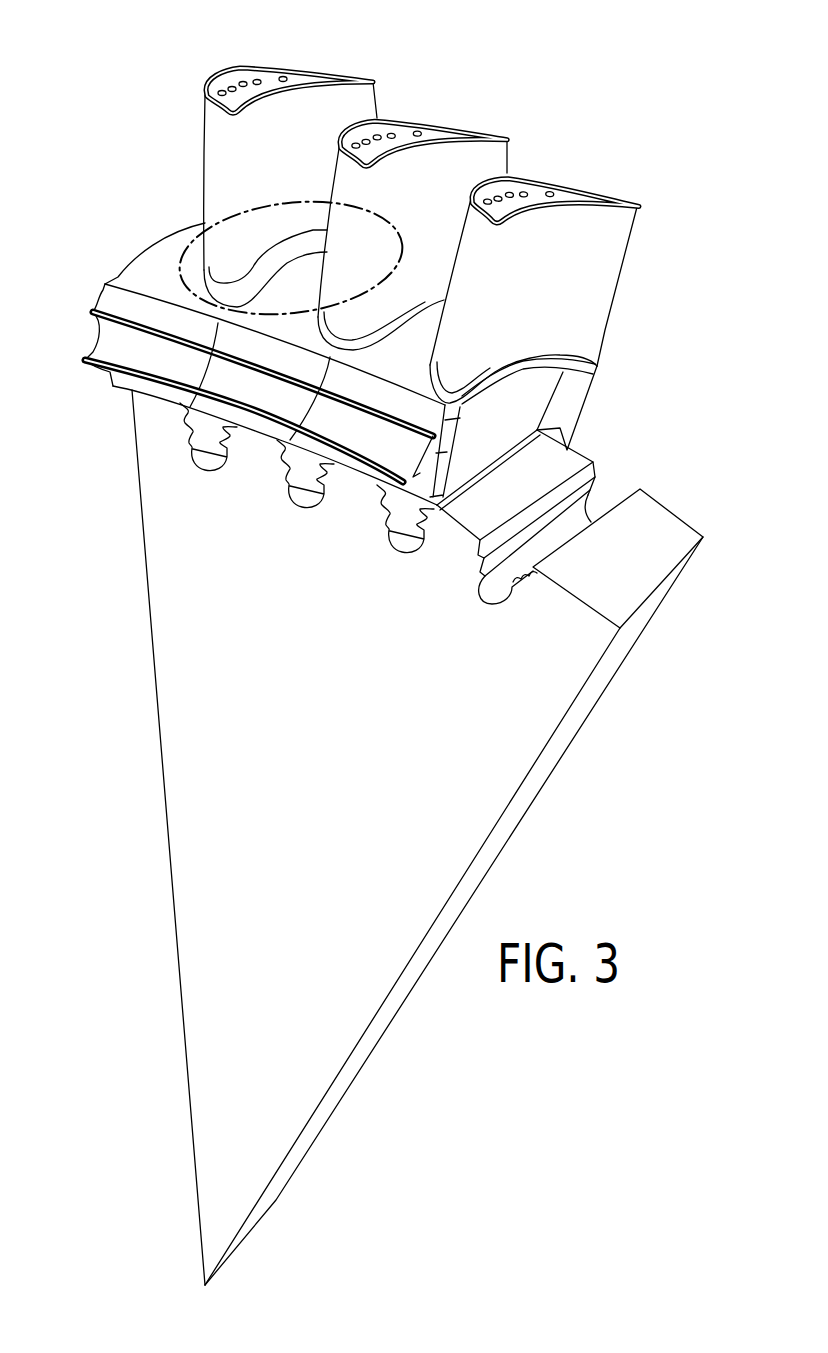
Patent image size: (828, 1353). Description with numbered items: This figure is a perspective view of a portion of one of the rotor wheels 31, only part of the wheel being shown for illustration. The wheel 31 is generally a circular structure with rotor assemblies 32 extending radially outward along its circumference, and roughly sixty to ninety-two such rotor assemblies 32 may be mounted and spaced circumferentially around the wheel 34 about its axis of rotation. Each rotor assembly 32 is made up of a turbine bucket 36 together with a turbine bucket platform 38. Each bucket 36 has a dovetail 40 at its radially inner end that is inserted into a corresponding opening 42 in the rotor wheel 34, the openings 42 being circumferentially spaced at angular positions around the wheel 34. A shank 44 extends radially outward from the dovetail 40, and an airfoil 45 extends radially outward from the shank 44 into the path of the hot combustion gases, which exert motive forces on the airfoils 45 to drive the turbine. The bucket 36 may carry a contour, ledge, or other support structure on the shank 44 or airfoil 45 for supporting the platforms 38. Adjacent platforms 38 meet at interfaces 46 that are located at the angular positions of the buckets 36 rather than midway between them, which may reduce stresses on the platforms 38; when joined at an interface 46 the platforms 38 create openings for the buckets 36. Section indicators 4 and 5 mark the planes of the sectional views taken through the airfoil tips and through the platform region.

The rotor wheel 31 is at (375, 837).
The rotor assemblies 32 is at (431, 302).
The wheel 34 is at (347, 1037).
The turbine bucket 36 is at (647, 207).
The turbine bucket platform 38 is at (138, 275).
The dovetail 40 is at (388, 527).
The openings 42 is at (600, 503).
The shank 44 is at (530, 390).
The airfoil 45 is at (215, 147).
The interfaces 46 is at (217, 378).
The section line 4- 4 is at (193, 62).
The section view 5 indicator 5 is at (200, 234).